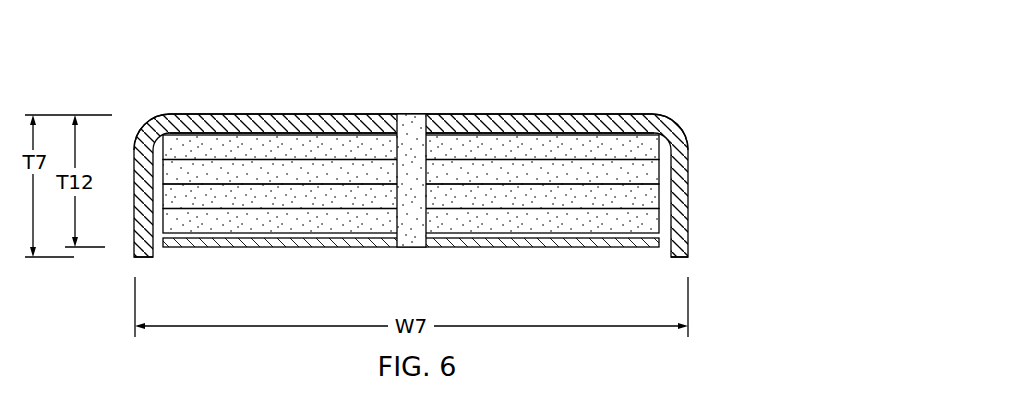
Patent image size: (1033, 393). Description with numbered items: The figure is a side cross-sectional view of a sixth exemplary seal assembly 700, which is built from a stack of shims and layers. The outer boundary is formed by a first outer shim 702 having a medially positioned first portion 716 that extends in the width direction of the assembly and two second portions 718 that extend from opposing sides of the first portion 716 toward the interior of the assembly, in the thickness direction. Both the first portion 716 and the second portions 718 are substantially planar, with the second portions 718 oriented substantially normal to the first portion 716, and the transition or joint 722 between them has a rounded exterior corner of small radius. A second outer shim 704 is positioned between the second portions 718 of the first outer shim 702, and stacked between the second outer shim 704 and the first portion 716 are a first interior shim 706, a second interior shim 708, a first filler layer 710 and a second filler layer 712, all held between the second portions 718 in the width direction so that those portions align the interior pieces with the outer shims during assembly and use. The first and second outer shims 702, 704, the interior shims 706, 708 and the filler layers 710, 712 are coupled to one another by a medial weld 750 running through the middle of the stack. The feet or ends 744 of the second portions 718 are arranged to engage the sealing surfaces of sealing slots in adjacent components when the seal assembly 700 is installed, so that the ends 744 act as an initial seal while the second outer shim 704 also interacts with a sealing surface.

The seal assembly 700 is at (416, 168).
The first outer shim 702 is at (520, 125).
The second outer shim 704 is at (495, 248).
The first interior shim 706 is at (247, 150).
The second interior shim 708 is at (245, 215).
The first filler layer 710 is at (315, 173).
The second filler layer 712 is at (336, 195).
The first portion 716 is at (447, 114).
The second portions 718 is at (134, 179).
The joint 722 is at (150, 120).
The ends 744 is at (144, 257).
The medial weld 750 is at (410, 135).